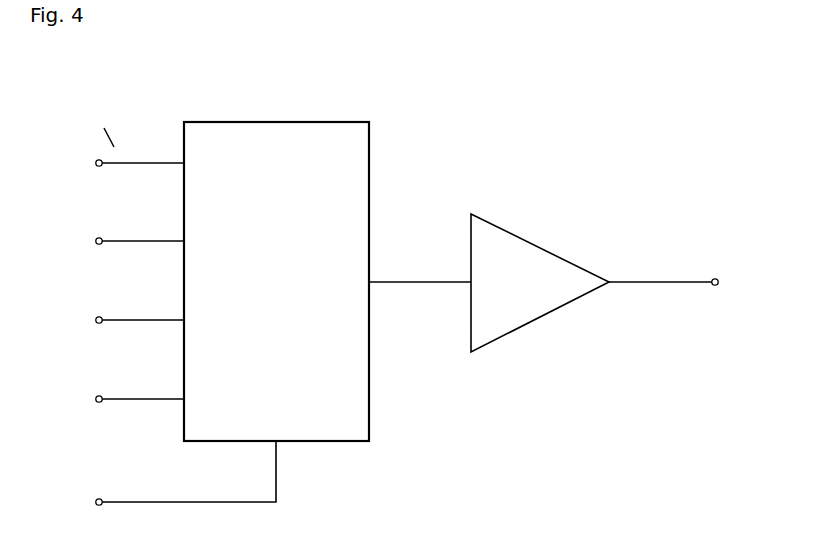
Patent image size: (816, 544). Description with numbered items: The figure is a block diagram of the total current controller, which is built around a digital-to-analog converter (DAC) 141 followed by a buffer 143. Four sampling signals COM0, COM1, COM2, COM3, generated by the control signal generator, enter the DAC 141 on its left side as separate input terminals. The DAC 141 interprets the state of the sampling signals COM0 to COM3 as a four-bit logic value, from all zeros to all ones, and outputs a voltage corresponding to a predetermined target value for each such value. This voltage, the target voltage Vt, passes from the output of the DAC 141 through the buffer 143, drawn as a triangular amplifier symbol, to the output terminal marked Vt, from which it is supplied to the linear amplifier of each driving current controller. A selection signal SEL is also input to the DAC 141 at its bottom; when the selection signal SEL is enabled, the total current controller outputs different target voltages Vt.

The digital-to-analog converter 141 is at (277, 121).
The buffer 143 is at (538, 245).
The sampling signal COM0 is at (108, 144).
The sampling signal COM1 is at (108, 223).
The sampling signal COM2 is at (108, 302).
The sampling signal COM3 is at (108, 381).
The selection signal SEL is at (178, 473).
The target voltage Vt is at (679, 281).